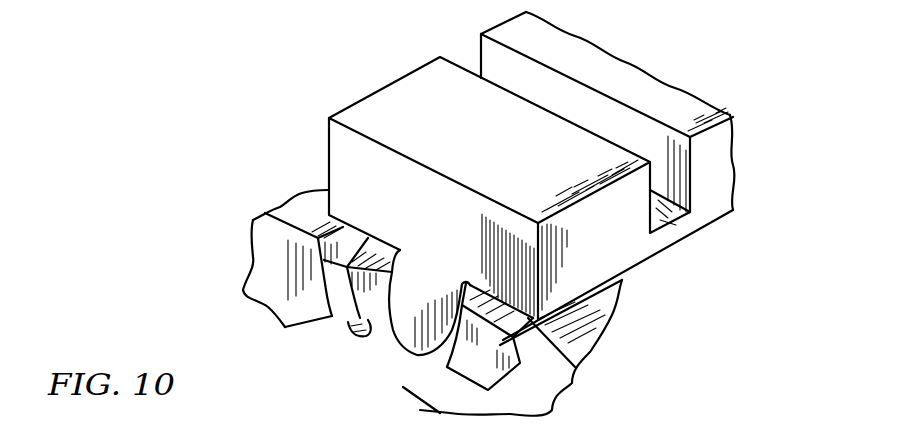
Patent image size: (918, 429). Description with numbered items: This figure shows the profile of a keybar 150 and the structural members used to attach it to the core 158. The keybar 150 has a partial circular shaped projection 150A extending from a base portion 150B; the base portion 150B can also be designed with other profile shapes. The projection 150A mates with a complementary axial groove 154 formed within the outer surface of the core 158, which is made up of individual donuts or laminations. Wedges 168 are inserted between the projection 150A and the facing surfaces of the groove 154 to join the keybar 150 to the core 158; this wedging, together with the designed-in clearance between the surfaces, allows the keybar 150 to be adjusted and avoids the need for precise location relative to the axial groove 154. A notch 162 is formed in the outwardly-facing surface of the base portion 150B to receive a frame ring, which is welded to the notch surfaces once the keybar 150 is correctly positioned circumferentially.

The keybar 150 is at (302, 134).
The partial circular shaped projection 150A is at (403, 387).
The base portion 150B is at (628, 247).
The axial groove 154 is at (400, 330).
The core 158 is at (268, 265).
The notch 162 is at (660, 210).
The wedge 168 is at (370, 307).